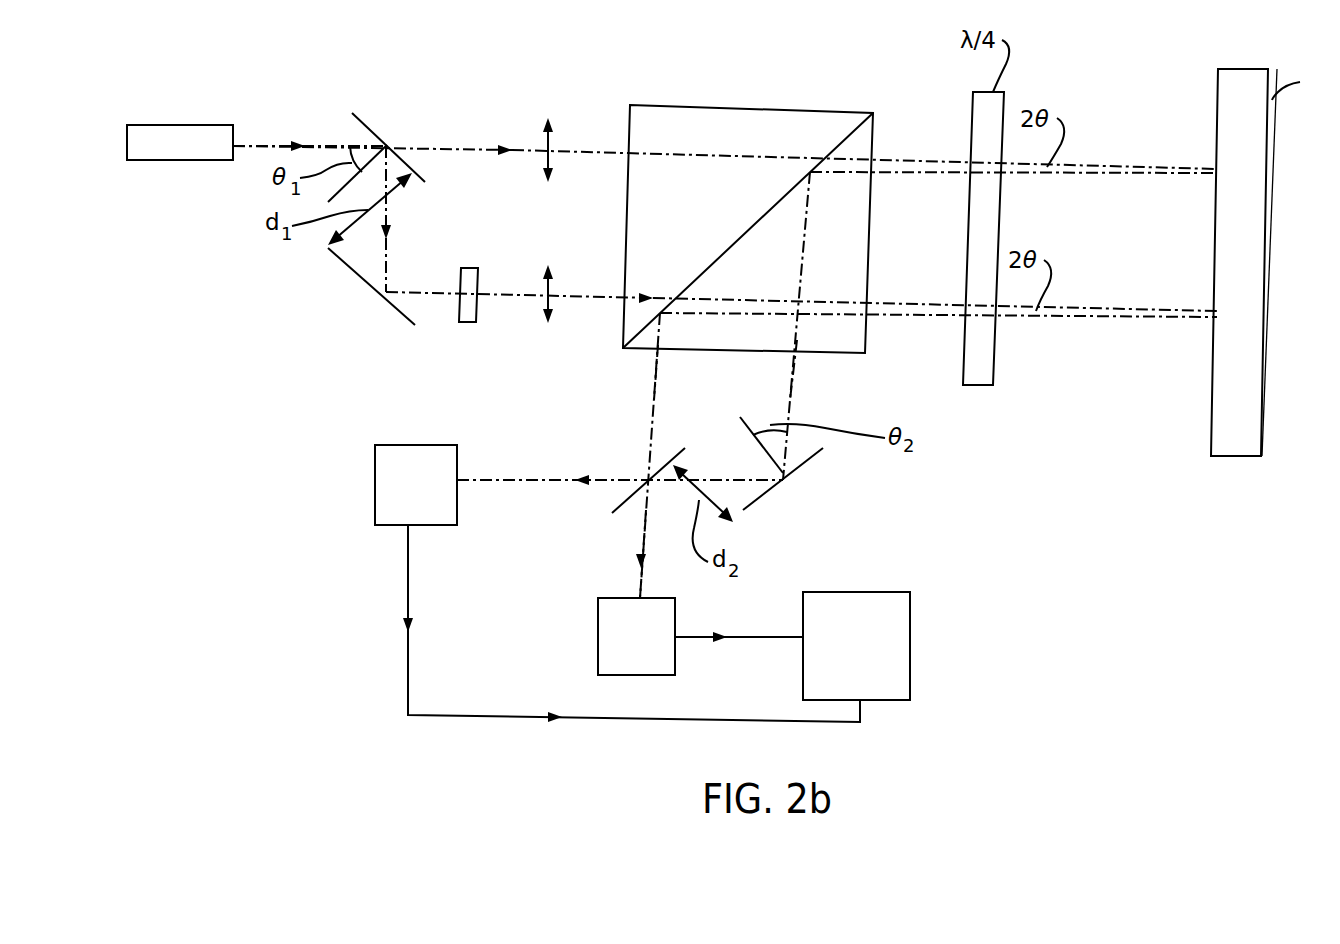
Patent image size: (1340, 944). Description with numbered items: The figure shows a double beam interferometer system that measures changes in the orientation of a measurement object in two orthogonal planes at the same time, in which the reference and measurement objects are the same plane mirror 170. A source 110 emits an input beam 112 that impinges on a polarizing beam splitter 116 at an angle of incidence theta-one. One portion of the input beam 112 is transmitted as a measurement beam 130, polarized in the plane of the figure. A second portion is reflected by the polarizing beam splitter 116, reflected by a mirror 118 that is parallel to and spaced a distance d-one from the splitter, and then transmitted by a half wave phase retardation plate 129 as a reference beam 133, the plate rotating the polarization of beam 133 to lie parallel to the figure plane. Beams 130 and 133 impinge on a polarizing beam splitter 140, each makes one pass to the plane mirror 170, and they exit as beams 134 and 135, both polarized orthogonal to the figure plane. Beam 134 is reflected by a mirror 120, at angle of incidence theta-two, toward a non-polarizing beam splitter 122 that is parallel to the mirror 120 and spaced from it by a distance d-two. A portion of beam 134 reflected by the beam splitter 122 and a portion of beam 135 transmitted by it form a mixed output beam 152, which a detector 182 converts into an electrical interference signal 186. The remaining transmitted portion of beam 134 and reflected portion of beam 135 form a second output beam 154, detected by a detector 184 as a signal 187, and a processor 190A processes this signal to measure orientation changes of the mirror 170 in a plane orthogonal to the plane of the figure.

The source 110 is at (193, 125).
The input beam 112 is at (270, 140).
The polarizing beam splitter 116 is at (367, 125).
The mirror 118 is at (360, 273).
The half wave phase retardation plate 129 is at (478, 268).
The measurement beam 130 is at (505, 148).
The reference beam 133 is at (518, 298).
The polarizing beam splitter 140 is at (735, 128).
The plane mirror 170 is at (1253, 69).
The non-polarizing beam splitter 122 is at (678, 450).
The mirror 120 is at (773, 498).
The measurement beam 134 is at (781, 397).
The reference beam 135 is at (652, 390).
The output beam 152 is at (640, 530).
The second output beam 154 is at (580, 472).
The detector 182 is at (598, 620).
The detector 184 is at (375, 470).
The electrical interference signal 186 is at (723, 642).
The signal 187 is at (526, 718).
The processor 190A is at (896, 592).